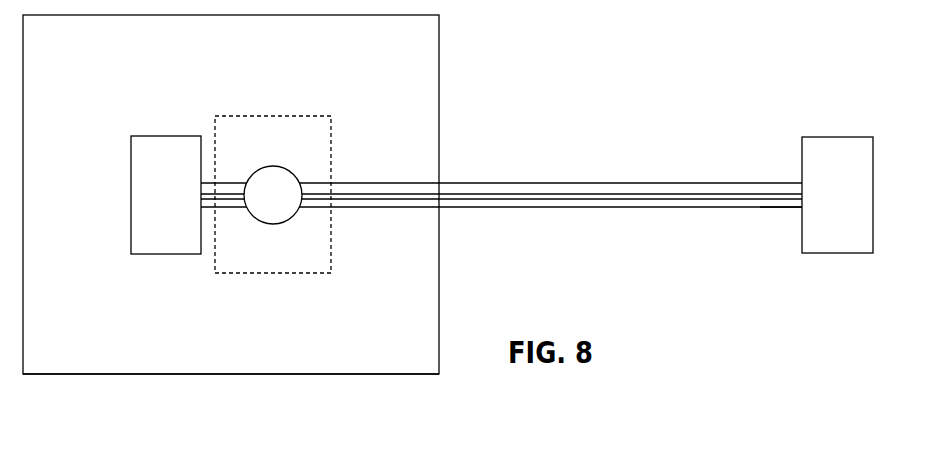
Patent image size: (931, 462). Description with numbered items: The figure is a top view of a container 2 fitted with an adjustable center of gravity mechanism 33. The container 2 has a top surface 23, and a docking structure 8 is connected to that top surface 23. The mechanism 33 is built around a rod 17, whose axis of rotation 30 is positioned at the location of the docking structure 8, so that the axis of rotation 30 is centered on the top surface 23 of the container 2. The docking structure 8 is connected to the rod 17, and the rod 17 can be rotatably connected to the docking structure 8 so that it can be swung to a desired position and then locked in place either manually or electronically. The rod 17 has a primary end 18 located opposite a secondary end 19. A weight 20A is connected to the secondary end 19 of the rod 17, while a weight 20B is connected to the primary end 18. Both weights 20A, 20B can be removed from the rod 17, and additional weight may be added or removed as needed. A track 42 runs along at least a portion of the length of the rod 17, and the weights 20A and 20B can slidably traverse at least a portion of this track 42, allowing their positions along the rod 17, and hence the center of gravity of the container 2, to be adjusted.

The container 2 is at (439, 297).
The docking structure 8 is at (307, 116).
The rod 17 is at (497, 183).
The primary end 18 is at (348, 183).
The secondary end 19 is at (790, 210).
The weight 20A is at (835, 137).
The weight 20B is at (168, 254).
The top surface 23 is at (273, 360).
The axis of rotation 30 is at (273, 224).
The adjustable center of gravity mechanism 33 is at (618, 140).
The track 42 is at (228, 197).